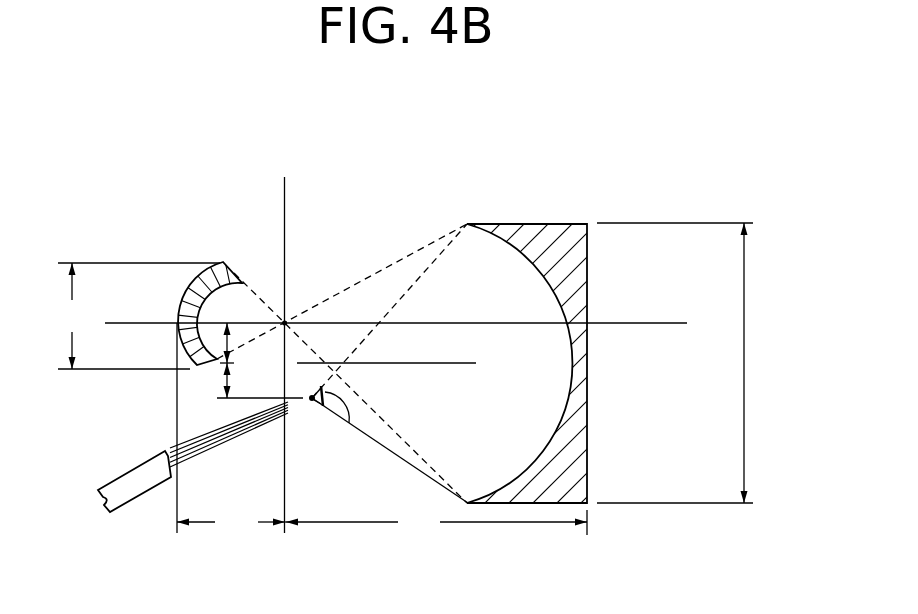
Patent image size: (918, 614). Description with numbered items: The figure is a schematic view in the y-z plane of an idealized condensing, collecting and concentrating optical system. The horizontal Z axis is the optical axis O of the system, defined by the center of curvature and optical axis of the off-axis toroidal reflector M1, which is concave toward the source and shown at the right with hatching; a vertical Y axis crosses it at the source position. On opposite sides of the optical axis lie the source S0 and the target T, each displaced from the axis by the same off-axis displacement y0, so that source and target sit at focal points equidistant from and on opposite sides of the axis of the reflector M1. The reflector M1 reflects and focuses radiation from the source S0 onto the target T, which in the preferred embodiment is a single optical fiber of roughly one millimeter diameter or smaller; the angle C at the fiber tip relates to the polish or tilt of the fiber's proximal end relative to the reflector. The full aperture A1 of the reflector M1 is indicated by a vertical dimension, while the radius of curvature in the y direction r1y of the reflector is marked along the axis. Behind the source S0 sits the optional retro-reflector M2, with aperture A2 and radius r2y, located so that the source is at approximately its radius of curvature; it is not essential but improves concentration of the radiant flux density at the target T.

The toroidal reflector M1 is at (528, 363).
The retro-reflector M2 is at (178, 397).
The full aperture A1 is at (678, 363).
The aperture of retro-reflector A2 is at (138, 316).
The y axis Y is at (283, 342).
The Z axis Z is at (406, 322).
The source S0 is at (285, 323).
The optical axis O is at (263, 381).
The target T is at (311, 408).
The angle at fiber tip C is at (339, 424).
The off-axis displacement y0 is at (248, 360).
The radius of toroidal reflector in y r1y is at (436, 515).
The radius of secondary mirror r2y is at (231, 513).